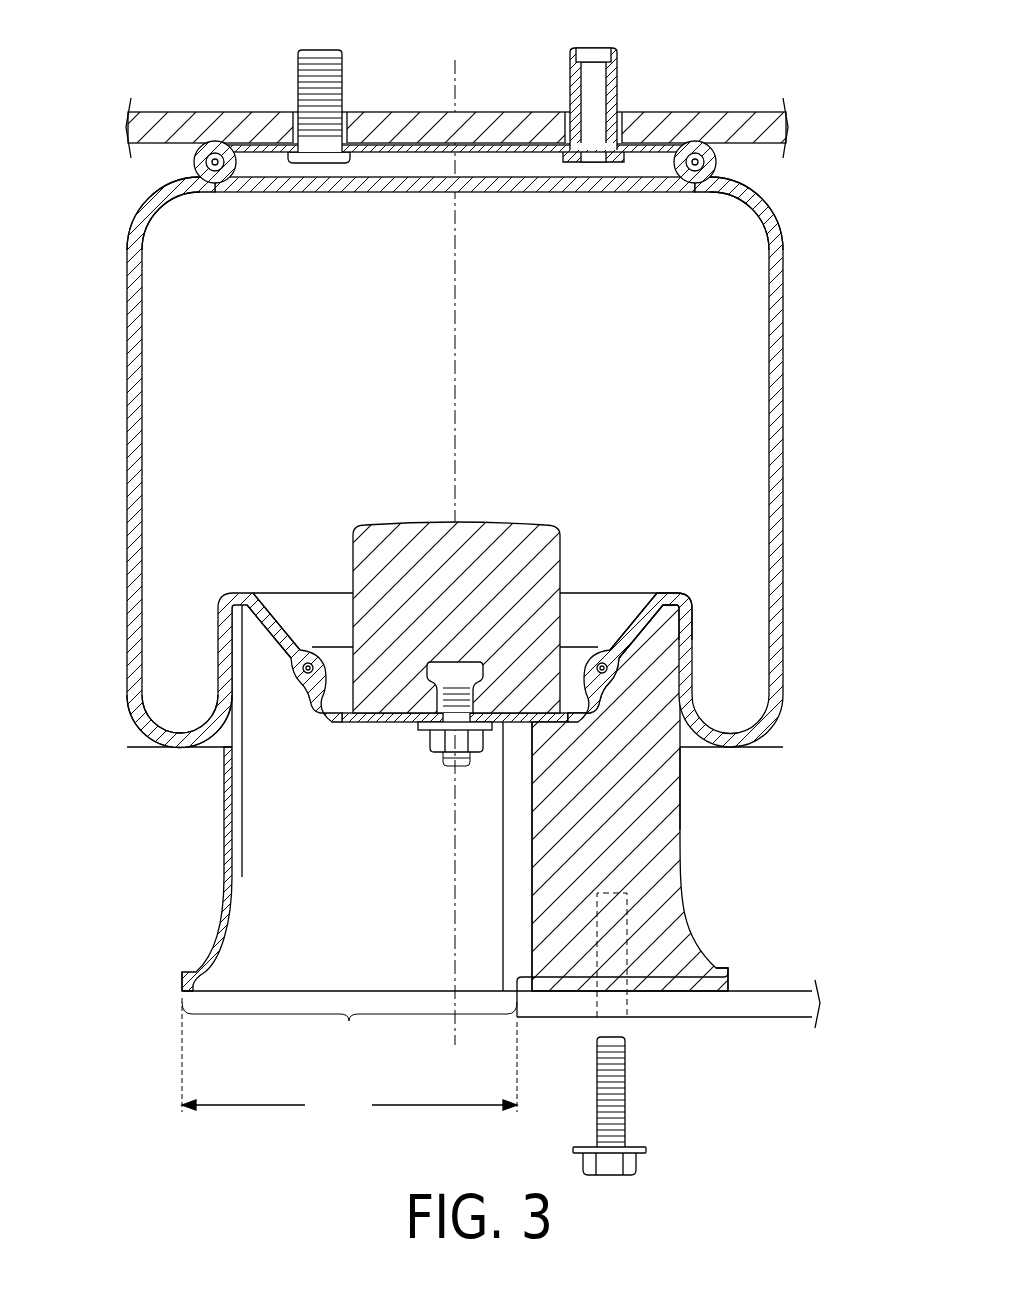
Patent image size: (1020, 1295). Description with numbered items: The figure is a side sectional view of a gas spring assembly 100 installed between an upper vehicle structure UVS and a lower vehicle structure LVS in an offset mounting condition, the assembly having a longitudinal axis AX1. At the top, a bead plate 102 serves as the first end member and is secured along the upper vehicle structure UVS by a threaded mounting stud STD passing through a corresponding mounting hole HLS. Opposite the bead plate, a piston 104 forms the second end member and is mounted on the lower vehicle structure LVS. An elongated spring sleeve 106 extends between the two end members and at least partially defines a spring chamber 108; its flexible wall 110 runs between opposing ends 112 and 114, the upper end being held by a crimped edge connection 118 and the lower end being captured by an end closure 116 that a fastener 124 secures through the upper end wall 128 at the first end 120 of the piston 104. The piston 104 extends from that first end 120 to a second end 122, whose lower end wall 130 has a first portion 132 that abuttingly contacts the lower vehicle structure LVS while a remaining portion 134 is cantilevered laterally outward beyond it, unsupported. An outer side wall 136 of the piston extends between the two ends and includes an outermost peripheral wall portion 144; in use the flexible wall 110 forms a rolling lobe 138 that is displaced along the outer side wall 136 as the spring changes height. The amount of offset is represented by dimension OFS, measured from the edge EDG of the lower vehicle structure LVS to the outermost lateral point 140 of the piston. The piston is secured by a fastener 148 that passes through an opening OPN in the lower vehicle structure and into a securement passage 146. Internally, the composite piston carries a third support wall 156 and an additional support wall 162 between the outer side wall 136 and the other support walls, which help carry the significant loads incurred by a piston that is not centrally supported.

The gas spring assembly 100 is at (477, 593).
The bead plate 102 is at (393, 144).
The piston 104 is at (470, 890).
The elongated spring sleeve 106 is at (465, 466).
The spring chamber 108 is at (627, 280).
The flexible wall 110 is at (784, 525).
The end of flexible wall 112 is at (133, 198).
The end of flexible wall 114 is at (219, 603).
The end closure 116 is at (336, 648).
The crimped edge connection 118 is at (722, 165).
The first end of piston 120 is at (680, 626).
The second end of piston 122 is at (682, 944).
The fastener 124 is at (445, 760).
The upper end wall 128 is at (390, 728).
The lower end wall 130 is at (318, 990).
The first portion of lower end wall 132 is at (672, 945).
The remaining portion of lower end wall 134 is at (349, 1028).
The outer side wall 136 is at (686, 822).
The rolling lobe 138 is at (210, 750).
The outermost lateral point 140 is at (181, 992).
The outermost peripheral wall portion 144 is at (720, 949).
The securement passage 146 is at (628, 893).
The fastener 148 is at (504, 998).
The third support wall 156 is at (517, 876).
The additional support wall 162 is at (655, 785).
The threaded mounting stud STD is at (298, 72).
The mounting hole HLS is at (293, 130).
The upper vehicle structure UVS is at (648, 112).
The longitudinal axis AX1 is at (462, 418).
The lower vehicle structure LVS is at (745, 1020).
The edge of lower vehicle structure EDG is at (520, 1002).
The opening OPN is at (625, 1020).
The offset dimension OFS is at (349, 1057).